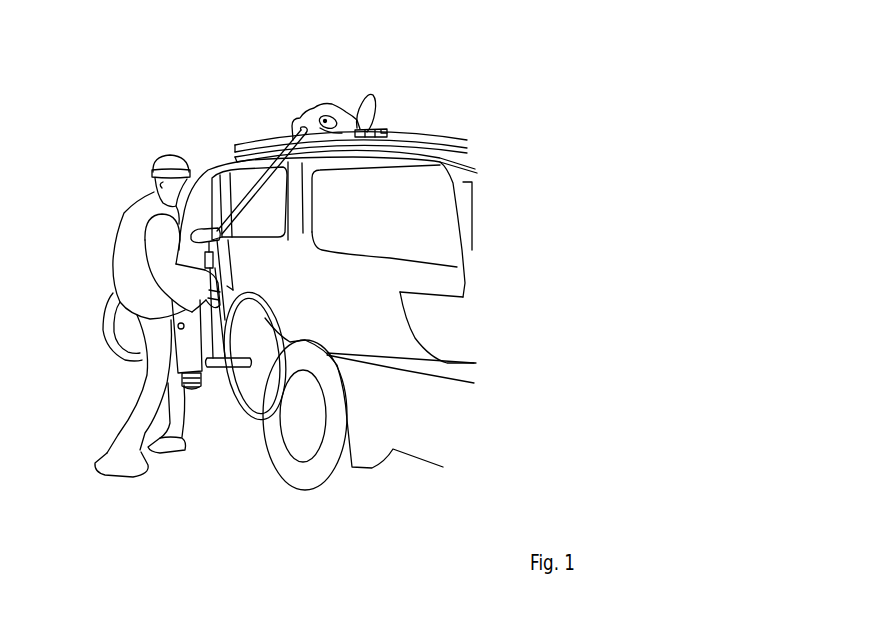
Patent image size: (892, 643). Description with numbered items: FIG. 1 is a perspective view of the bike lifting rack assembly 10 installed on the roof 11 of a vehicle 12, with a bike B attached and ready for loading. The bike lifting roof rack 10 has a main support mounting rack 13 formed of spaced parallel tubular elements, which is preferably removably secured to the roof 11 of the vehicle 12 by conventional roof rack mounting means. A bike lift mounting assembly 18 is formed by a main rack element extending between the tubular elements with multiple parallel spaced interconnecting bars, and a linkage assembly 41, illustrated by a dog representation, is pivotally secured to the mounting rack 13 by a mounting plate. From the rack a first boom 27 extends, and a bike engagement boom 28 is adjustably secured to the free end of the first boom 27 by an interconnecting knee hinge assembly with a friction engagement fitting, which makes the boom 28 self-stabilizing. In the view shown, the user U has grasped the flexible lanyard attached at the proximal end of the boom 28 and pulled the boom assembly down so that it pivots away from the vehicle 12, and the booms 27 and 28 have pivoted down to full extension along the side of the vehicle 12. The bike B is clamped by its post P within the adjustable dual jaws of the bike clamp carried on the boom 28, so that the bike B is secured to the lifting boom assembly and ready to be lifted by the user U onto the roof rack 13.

The bike lifting rack assembly 10 is at (420, 134).
The roof 11 is at (215, 164).
The vehicle 12 is at (491, 187).
The main support mounting rack 13 is at (450, 146).
The bike lift mounting assembly 18 is at (389, 116).
The first boom 27 is at (250, 195).
The bike engagement boom 28 is at (237, 270).
The linkage assembly 41 is at (335, 105).
The bike B is at (245, 417).
The post P is at (210, 243).
The user U is at (121, 219).